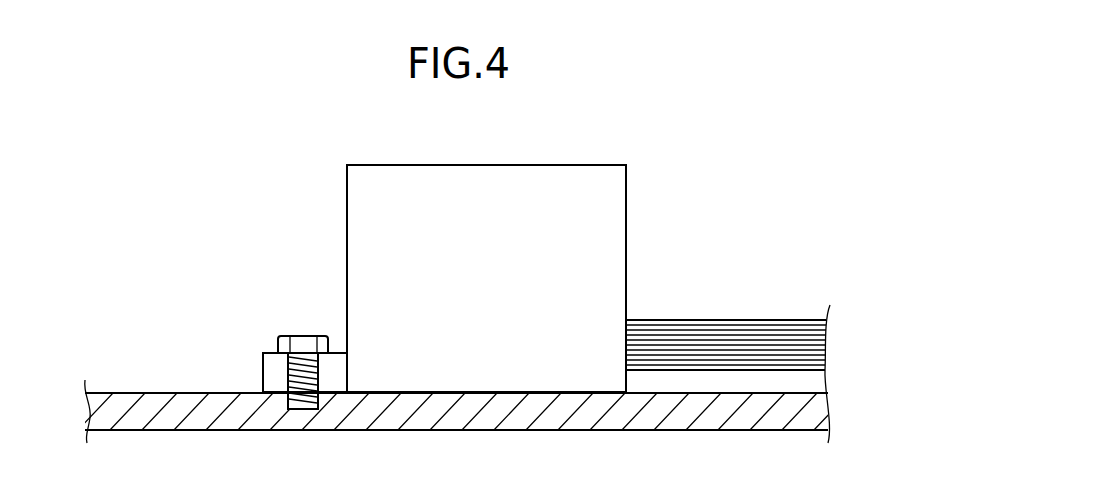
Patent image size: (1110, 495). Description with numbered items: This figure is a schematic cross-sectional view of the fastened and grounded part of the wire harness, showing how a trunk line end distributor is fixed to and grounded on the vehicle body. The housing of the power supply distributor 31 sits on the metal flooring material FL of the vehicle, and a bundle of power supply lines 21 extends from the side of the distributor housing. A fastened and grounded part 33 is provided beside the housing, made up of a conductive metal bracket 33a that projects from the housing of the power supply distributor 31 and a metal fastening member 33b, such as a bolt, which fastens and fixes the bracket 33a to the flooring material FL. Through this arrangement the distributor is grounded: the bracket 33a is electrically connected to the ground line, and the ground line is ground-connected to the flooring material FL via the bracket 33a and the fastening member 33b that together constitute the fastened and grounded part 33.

The power supply distributor 31 is at (568, 165).
The power supply line 21 is at (715, 320).
The fastened and grounded part 33 is at (320, 252).
The bracket 33a is at (263, 363).
The fastening member 33b is at (300, 335).
The flooring material FL is at (163, 392).